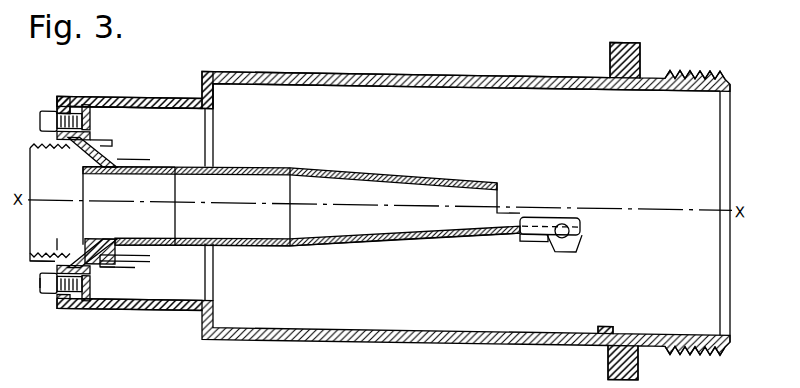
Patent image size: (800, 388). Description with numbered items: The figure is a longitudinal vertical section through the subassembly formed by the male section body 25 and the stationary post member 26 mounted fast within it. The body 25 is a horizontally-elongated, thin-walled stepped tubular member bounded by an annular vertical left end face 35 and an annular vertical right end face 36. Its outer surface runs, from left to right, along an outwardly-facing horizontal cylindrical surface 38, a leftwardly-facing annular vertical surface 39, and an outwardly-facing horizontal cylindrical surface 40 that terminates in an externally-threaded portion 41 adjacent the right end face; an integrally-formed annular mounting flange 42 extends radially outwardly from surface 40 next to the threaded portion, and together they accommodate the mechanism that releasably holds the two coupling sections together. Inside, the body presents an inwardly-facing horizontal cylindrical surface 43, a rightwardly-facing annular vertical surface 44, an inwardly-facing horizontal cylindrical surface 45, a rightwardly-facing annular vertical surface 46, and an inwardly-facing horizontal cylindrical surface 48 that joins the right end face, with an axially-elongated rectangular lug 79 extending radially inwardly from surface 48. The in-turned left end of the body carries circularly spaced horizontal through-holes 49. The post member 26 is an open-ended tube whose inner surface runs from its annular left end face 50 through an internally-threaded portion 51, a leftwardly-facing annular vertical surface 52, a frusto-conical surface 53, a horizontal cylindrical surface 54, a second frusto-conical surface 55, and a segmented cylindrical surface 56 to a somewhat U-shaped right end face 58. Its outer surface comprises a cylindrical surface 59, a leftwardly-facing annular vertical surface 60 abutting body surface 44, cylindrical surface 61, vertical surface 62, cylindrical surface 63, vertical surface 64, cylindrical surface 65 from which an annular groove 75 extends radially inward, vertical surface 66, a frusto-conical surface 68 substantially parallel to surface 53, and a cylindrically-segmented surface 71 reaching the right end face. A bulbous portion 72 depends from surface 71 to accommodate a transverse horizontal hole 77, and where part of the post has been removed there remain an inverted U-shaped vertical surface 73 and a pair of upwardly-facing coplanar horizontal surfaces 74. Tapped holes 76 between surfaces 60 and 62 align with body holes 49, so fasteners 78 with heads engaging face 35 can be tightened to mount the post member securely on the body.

The male section body 25 is at (393, 196).
The stationary post member 26 is at (301, 185).
The left end face 35 is at (74, 91).
The right end face 36 is at (720, 189).
The outwardly-facing horizontal cylindrical surface 38 is at (129, 89).
The leftwardly-facing annular vertical surface 39 is at (192, 80).
The outwardly-facing horizontal cylindrical surface 40 is at (411, 57).
The externally-threaded portion 41 is at (694, 195).
The annular mounting flange 42 is at (604, 60).
The inwardly-facing horizontal cylindrical surface 43 is at (50, 203).
The rightwardly-facing annular vertical surface 44 is at (89, 122).
The inwardly-facing horizontal cylindrical surface 45 is at (141, 120).
The rightwardly-facing annular vertical surface 46 is at (234, 97).
The inwardly-facing horizontal cylindrical surface 48 is at (466, 100).
The horizontal through-holes 49 is at (44, 303).
The left end face 50 is at (31, 270).
The internally-threaded portion 51 is at (43, 233).
The leftwardly-facing annular vertical surface 52 is at (114, 205).
The inwardly- and leftwardly-facing frusto-conical surface 53 is at (141, 206).
The inwardly-facing horizontal cylindrical surface 54 is at (232, 206).
The inwardly- and leftwardly-facing frusto-conical surface 55 is at (345, 229).
The segmented inwardly-facing horizontal cylindrical surface 56 is at (460, 224).
The right end face 58 is at (588, 235).
The outwardly-facing horizontal cylindrical surface 59 is at (34, 111).
The leftwardly-facing annular vertical surface 60 is at (84, 263).
The outwardly-facing horizontal cylindrical surface 61 is at (71, 304).
The rightwardly-facing annular vertical surface 62 is at (129, 295).
The outwardly-facing horizontal cylindrical surface 63 is at (129, 279).
The rightwardly-facing annular vertical surface 64 is at (140, 271).
The outwardly-facing horizontal cylindrical surface 65 is at (128, 262).
The rightwardly-facing annular vertical surface 66 is at (138, 256).
The outwardly- and rightwardly-facing frusto-conical surface 68 is at (127, 149).
The outwardly-facing horizontal cylindrically-segmented surface 71 is at (528, 251).
The bulbous portion 72 is at (577, 251).
The rightwardly-facing inverted U-shaped vertical surface 73 is at (515, 190).
The upwardly-facing coplanar horizontal surfaces 74 is at (550, 207).
The annular groove 75 is at (117, 143).
The tapped holes 76 is at (90, 118).
The transverse horizontal hole 77 is at (571, 220).
The fasteners 78 is at (24, 296).
The rectangular lug 79 is at (614, 335).